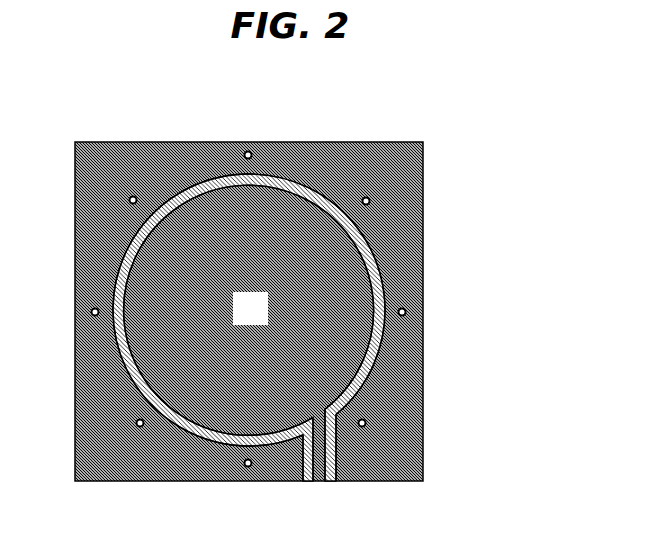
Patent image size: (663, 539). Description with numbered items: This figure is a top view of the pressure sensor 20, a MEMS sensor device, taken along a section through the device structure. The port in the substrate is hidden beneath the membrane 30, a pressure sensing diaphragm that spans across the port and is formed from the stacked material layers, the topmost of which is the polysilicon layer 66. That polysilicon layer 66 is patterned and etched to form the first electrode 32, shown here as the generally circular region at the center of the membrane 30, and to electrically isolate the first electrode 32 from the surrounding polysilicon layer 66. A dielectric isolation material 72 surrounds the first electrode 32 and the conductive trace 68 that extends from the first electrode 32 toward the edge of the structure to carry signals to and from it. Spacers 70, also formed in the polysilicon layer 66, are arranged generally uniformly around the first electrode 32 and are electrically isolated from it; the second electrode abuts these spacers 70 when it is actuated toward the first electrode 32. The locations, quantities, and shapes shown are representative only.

The pressure sensor 20 is at (290, 318).
The membrane 30 is at (368, 288).
The first electrode 32 is at (239, 322).
The polysilicon layer 66 is at (415, 385).
The conductive trace 68 is at (322, 483).
The spacers 70 is at (370, 200).
The dielectric isolation material 72 is at (210, 180).